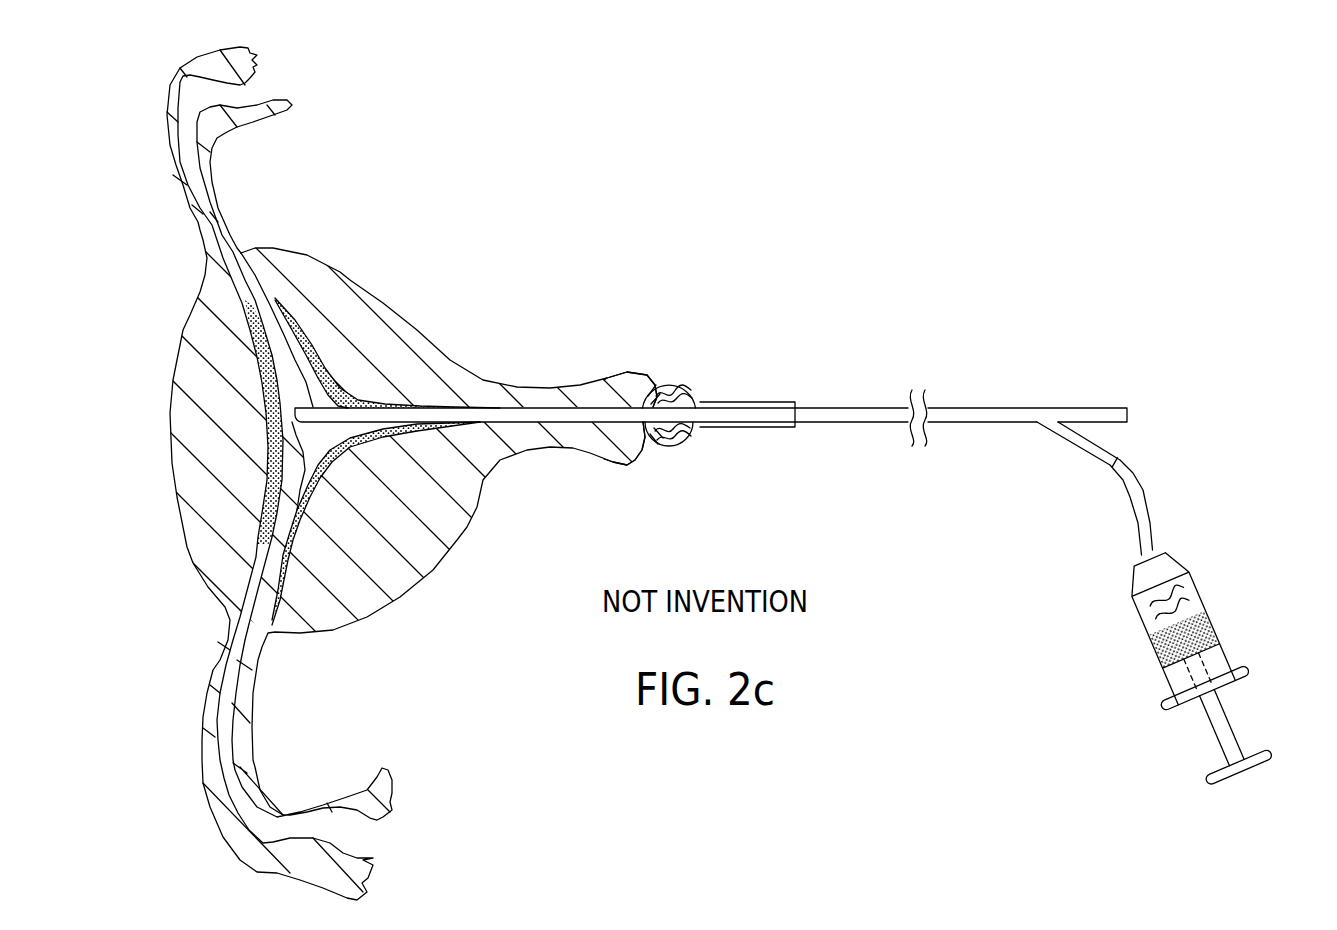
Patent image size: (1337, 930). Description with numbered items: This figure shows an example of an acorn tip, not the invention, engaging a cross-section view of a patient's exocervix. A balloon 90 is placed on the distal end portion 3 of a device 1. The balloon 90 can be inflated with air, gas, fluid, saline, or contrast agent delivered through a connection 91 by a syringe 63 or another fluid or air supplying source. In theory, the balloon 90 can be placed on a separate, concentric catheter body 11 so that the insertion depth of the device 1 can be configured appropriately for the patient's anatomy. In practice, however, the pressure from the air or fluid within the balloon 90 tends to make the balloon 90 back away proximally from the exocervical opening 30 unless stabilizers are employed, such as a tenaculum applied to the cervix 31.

The device 1 is at (852, 416).
The distal end portion 3 is at (311, 398).
The concentric catheter body 11 is at (740, 428).
The exocervical opening 30 is at (670, 445).
The cervix 31 is at (604, 380).
The syringe 63 is at (1139, 620).
The balloon 90 is at (672, 387).
The connection 91 is at (1127, 508).